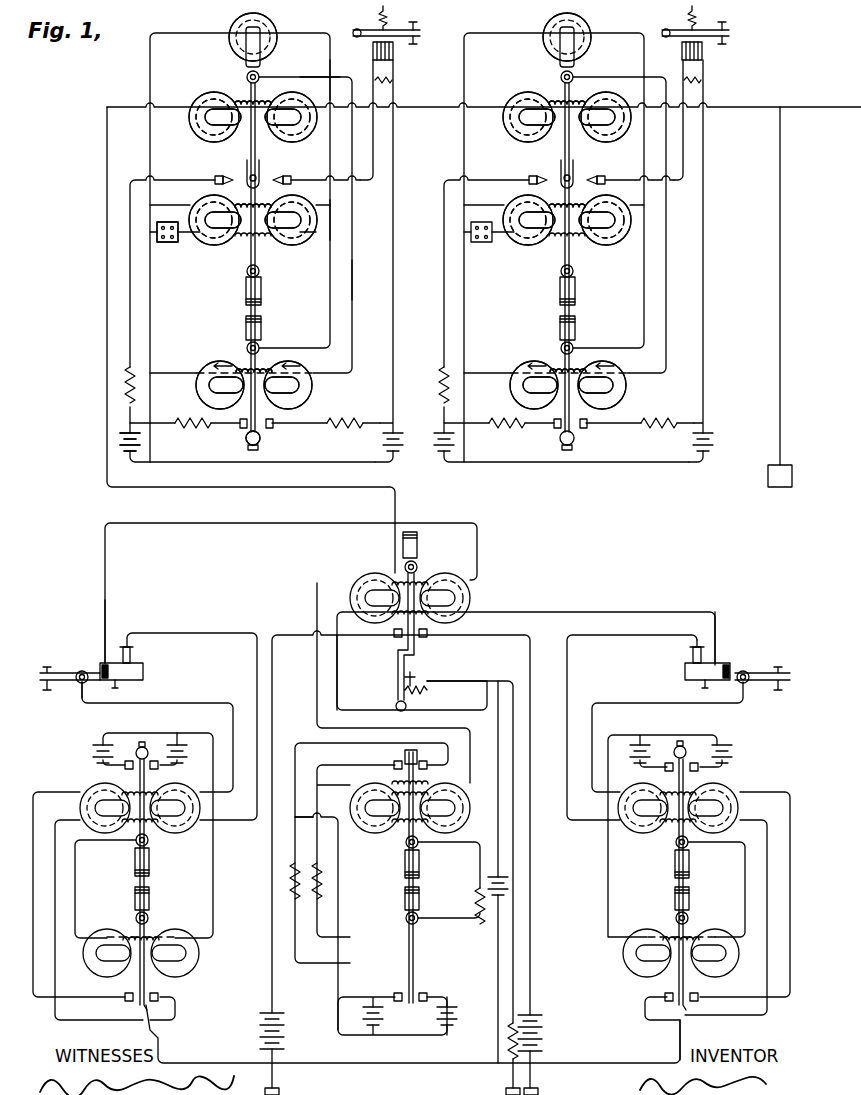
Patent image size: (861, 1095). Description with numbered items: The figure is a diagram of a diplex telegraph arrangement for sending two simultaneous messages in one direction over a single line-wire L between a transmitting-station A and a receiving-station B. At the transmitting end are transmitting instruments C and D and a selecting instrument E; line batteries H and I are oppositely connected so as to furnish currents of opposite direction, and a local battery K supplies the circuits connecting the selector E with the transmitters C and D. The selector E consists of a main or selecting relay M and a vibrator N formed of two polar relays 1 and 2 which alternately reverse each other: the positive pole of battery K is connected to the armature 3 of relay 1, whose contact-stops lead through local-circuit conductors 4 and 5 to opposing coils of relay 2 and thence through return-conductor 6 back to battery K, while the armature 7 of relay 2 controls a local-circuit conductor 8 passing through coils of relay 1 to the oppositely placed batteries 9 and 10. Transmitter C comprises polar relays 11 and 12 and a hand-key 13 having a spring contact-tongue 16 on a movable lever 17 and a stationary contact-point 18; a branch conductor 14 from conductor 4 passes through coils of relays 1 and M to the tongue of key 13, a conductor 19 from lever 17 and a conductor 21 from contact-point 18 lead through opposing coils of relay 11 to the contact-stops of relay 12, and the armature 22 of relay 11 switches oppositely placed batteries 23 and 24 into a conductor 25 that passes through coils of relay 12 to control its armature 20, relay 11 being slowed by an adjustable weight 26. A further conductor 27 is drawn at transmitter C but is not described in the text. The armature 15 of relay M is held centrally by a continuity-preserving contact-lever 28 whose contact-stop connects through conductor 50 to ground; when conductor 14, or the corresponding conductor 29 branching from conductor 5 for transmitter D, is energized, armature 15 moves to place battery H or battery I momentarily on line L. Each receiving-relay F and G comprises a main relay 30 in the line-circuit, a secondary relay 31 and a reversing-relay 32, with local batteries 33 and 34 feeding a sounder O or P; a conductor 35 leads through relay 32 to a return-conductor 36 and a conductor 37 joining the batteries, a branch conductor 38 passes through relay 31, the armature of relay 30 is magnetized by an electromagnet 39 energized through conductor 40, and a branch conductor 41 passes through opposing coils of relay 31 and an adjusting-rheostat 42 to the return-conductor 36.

The polar relay 1 is at (404, 876).
The polar relay 2 is at (388, 919).
The armature 3 is at (436, 775).
The local-circuit conductor 4 is at (312, 768).
The local-circuit conductor 5 is at (295, 793).
The return-conductor 6 is at (497, 928).
The armature 7 is at (414, 980).
The local-circuit conductor 8 is at (360, 912).
The battery 9 is at (392, 1016).
The battery 10 is at (454, 1016).
The polar relay 11 is at (427, 856).
The polar relay 12 is at (427, 908).
The hand-key 13 is at (143, 679).
The branch conductor 14 is at (285, 523).
The armature 15 is at (418, 566).
The spring contact-tongue 16 is at (117, 660).
The movable lever 17 is at (101, 681).
The stationary contact-point 18 is at (131, 654).
The conductor 19 is at (218, 703).
The armature 20 is at (160, 984).
The conductor 21 is at (228, 638).
The armature 22 is at (160, 767).
The battery 23 is at (95, 750).
The battery 24 is at (182, 753).
The conductor 25 is at (86, 918).
The weight 26 is at (136, 750).
The wire 27 is at (413, 1034).
The continuity-preserving contact-lever 28 is at (409, 666).
The conductor 29 is at (471, 811).
The main relay 30 is at (397, 117).
The secondary relay 31 is at (403, 213).
The reversing-relay 32 is at (411, 372).
The local battery 33 is at (140, 441).
The local battery 34 is at (395, 454).
The conductor 35 is at (315, 66).
The return-conductor 36 is at (152, 332).
The conductor 37 is at (240, 444).
The branch conductor 38 is at (340, 218).
The electromagnet 39 is at (418, 34).
The conductor 40 is at (325, 157).
The branch conductor 41 is at (308, 237).
The adjusting-rheostat 42 is at (170, 243).
The conductor 50 is at (505, 682).
The transmitting-station A is at (375, 1083).
The receiving-station B is at (760, 297).
The transmitting instrument C is at (140, 836).
The transmitting instrument D is at (678, 825).
The selecting instrument E is at (526, 661).
The receiving-relay F is at (205, 285).
The receiving-relay G is at (520, 285).
The line battery H is at (285, 1054).
The line battery I is at (539, 1055).
The local battery K is at (451, 883).
The line-wire L is at (484, 313).
The selecting relay M is at (410, 587).
The vibrator N is at (369, 881).
The sounder O is at (386, 234).
The sounder P is at (695, 234).